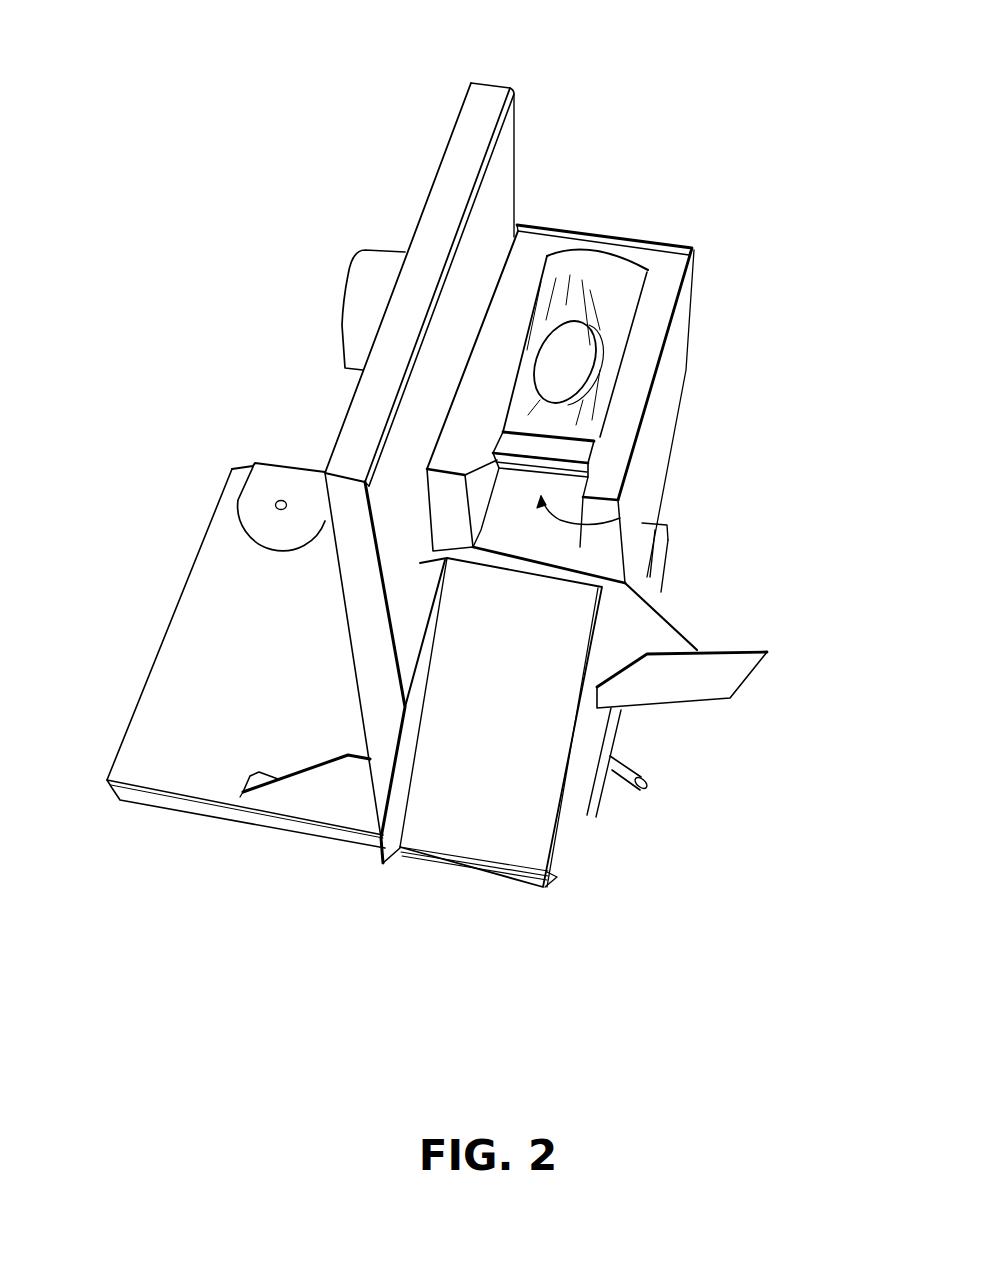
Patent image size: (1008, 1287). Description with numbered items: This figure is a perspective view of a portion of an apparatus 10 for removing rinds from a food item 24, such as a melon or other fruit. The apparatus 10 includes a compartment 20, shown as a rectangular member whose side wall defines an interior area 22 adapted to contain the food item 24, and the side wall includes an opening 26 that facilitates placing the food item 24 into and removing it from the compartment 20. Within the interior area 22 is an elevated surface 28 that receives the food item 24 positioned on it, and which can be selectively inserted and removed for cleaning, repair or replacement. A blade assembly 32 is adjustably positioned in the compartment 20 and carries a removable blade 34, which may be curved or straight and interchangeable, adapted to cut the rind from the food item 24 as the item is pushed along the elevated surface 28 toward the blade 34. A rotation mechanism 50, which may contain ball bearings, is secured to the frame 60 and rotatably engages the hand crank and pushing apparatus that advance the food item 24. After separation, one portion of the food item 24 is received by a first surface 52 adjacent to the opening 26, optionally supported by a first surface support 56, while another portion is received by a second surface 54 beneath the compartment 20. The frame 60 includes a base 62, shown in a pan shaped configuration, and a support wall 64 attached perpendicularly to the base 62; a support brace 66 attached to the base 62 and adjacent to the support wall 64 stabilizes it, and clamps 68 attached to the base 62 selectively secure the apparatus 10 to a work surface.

The apparatus for removing rinds 10 is at (818, 334).
The compartment 20 is at (697, 308).
The interior area 22 is at (575, 570).
The food item 24 is at (568, 337).
The opening 26 is at (620, 272).
The elevated surface 28 is at (606, 338).
The blade assembly 32 is at (580, 465).
The blade 34 is at (598, 438).
The rotation mechanism 50 is at (383, 267).
The first surface 52 is at (482, 823).
The second surface 54 is at (657, 637).
The first surface support 56 is at (565, 873).
The frame 60 is at (266, 329).
The base 62 is at (152, 739).
The support wall 64 is at (485, 102).
The support brace 66 is at (292, 803).
The clamp 68 is at (283, 466).